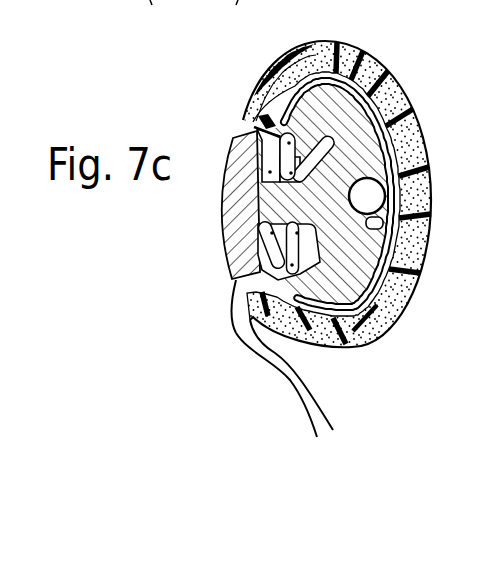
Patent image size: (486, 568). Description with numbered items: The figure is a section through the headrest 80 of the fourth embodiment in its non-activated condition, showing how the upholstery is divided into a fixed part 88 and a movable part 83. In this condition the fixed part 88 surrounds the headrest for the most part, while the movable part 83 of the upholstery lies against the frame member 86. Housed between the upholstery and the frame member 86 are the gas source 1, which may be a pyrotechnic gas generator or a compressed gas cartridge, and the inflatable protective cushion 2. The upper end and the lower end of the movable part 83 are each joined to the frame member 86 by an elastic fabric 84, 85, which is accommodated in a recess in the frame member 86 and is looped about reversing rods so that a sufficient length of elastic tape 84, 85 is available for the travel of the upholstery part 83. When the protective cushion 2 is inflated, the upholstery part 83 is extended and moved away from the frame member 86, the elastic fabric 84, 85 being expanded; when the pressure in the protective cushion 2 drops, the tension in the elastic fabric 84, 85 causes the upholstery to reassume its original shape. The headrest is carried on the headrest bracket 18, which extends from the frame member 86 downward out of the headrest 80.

The gas source 1 is at (385, 187).
The inflatable protective cushion 2 is at (380, 328).
The headrest bracket 18 is at (300, 382).
The headrest 80 is at (248, 220).
The movable part of the upholstery 83 is at (413, 262).
The elastic fabric 84 is at (238, 138).
The elastic fabric 85 is at (239, 252).
The frame member 86 is at (337, 90).
The fixed part of the upholstery 88 is at (229, 203).